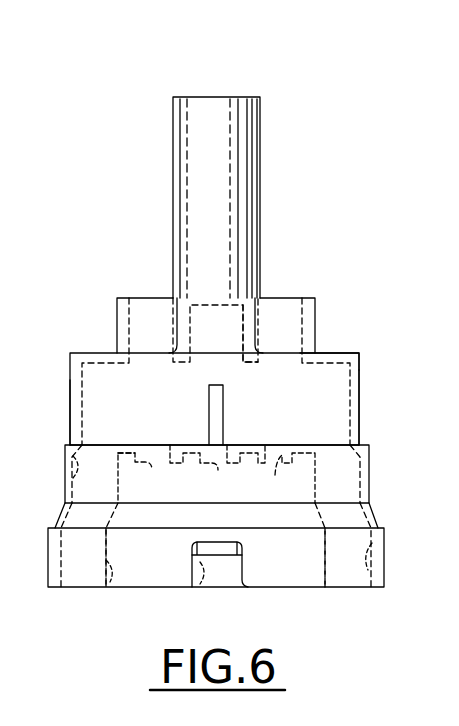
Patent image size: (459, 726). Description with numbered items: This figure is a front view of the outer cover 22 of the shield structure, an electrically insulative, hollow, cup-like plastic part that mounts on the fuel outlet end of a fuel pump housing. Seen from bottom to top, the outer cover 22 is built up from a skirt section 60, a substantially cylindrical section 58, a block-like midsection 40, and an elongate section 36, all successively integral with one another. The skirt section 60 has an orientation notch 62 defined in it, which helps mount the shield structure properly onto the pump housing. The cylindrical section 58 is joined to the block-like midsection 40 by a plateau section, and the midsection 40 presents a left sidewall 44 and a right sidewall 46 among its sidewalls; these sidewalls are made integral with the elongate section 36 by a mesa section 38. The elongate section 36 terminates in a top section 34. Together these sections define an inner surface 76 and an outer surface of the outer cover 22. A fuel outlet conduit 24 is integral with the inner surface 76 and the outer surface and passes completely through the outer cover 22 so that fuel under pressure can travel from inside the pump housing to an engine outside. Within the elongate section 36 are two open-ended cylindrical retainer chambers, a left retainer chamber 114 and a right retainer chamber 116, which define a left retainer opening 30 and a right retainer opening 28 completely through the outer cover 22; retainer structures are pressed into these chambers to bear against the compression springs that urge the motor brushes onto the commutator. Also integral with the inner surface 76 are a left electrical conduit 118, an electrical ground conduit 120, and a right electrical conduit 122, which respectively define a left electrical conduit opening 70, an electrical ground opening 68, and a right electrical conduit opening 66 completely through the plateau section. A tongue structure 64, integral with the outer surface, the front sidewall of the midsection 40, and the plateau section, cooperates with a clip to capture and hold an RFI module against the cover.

The outer cover 22 is at (395, 68).
The fuel outlet conduit 24 is at (258, 130).
The right retainer opening 28 is at (276, 290).
The left retainer opening 30 is at (156, 290).
The top section 34 is at (298, 298).
The elongate section 36 is at (113, 318).
The mesa section 38 is at (347, 352).
The block-like midsection 40 is at (68, 418).
The left sidewall 44 is at (69, 392).
The right sidewall 46 is at (362, 390).
The cylindrical section 58 is at (374, 470).
The skirt section 60 is at (46, 551).
The orientation notch 62 is at (246, 557).
The tongue structure 64 is at (214, 384).
The right electrical conduit opening 66 is at (281, 437).
The electrical ground opening 68 is at (236, 438).
The left electrical conduit opening 70 is at (164, 440).
The inner surface 76 is at (366, 362).
The left retainer chamber 114 is at (137, 315).
The right retainer chamber 116 is at (282, 317).
The left electrical conduit 118 is at (134, 557).
The electrical ground conduit 120 is at (168, 475).
The right electrical conduit 122 is at (297, 557).